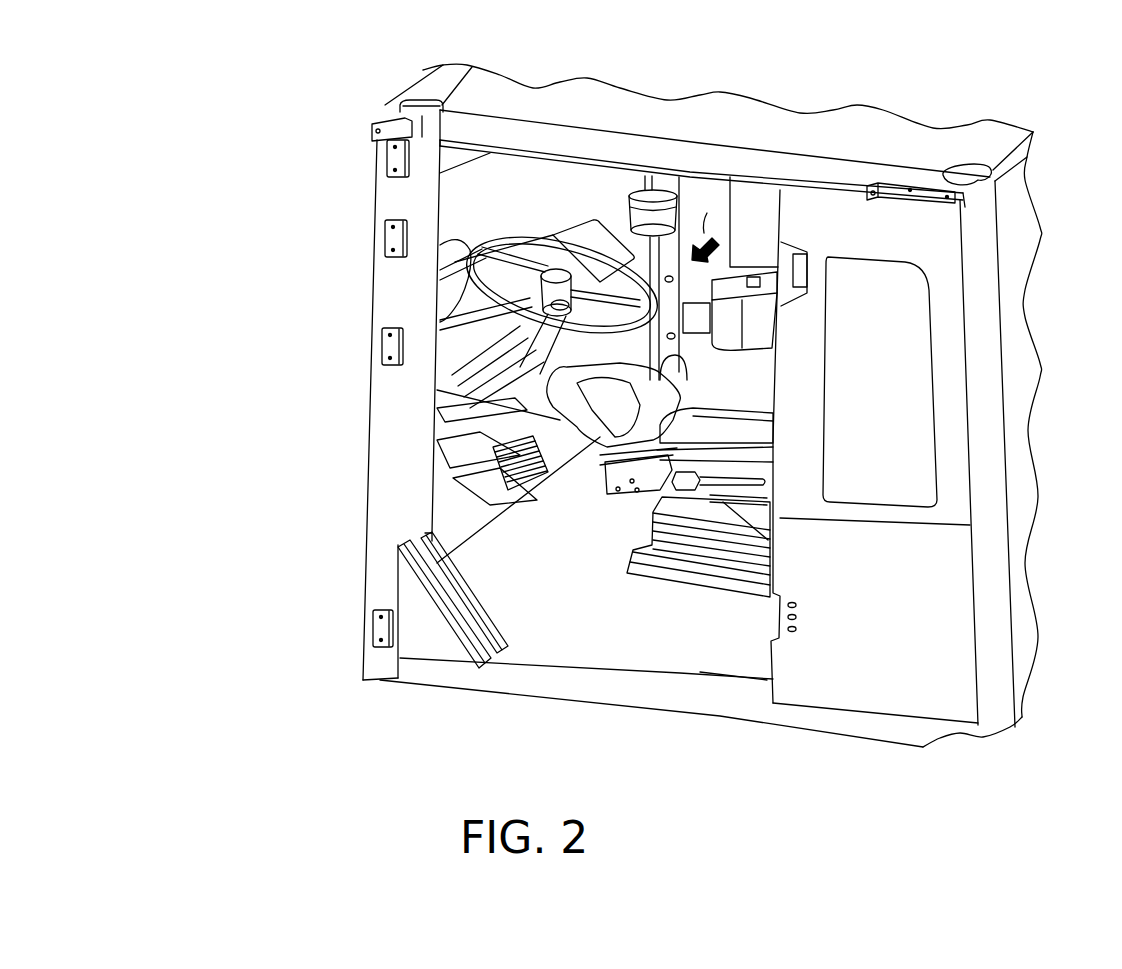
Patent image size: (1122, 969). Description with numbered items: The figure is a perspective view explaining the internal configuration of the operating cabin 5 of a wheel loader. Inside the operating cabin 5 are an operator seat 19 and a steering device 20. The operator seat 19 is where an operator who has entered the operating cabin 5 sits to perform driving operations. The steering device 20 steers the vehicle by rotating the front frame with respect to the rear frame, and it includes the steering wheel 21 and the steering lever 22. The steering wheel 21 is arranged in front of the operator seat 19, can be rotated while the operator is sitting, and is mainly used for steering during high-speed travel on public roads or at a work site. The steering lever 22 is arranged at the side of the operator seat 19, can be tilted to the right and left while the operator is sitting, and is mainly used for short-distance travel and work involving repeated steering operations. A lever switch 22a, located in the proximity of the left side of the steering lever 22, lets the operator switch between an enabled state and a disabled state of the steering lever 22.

The operating cabin 5 is at (872, 128).
The operator seat 19 is at (740, 400).
The steering device 20 is at (238, 237).
The steering wheel 21 is at (472, 242).
The steering lever 22 is at (475, 381).
The lever switch 22a is at (445, 477).